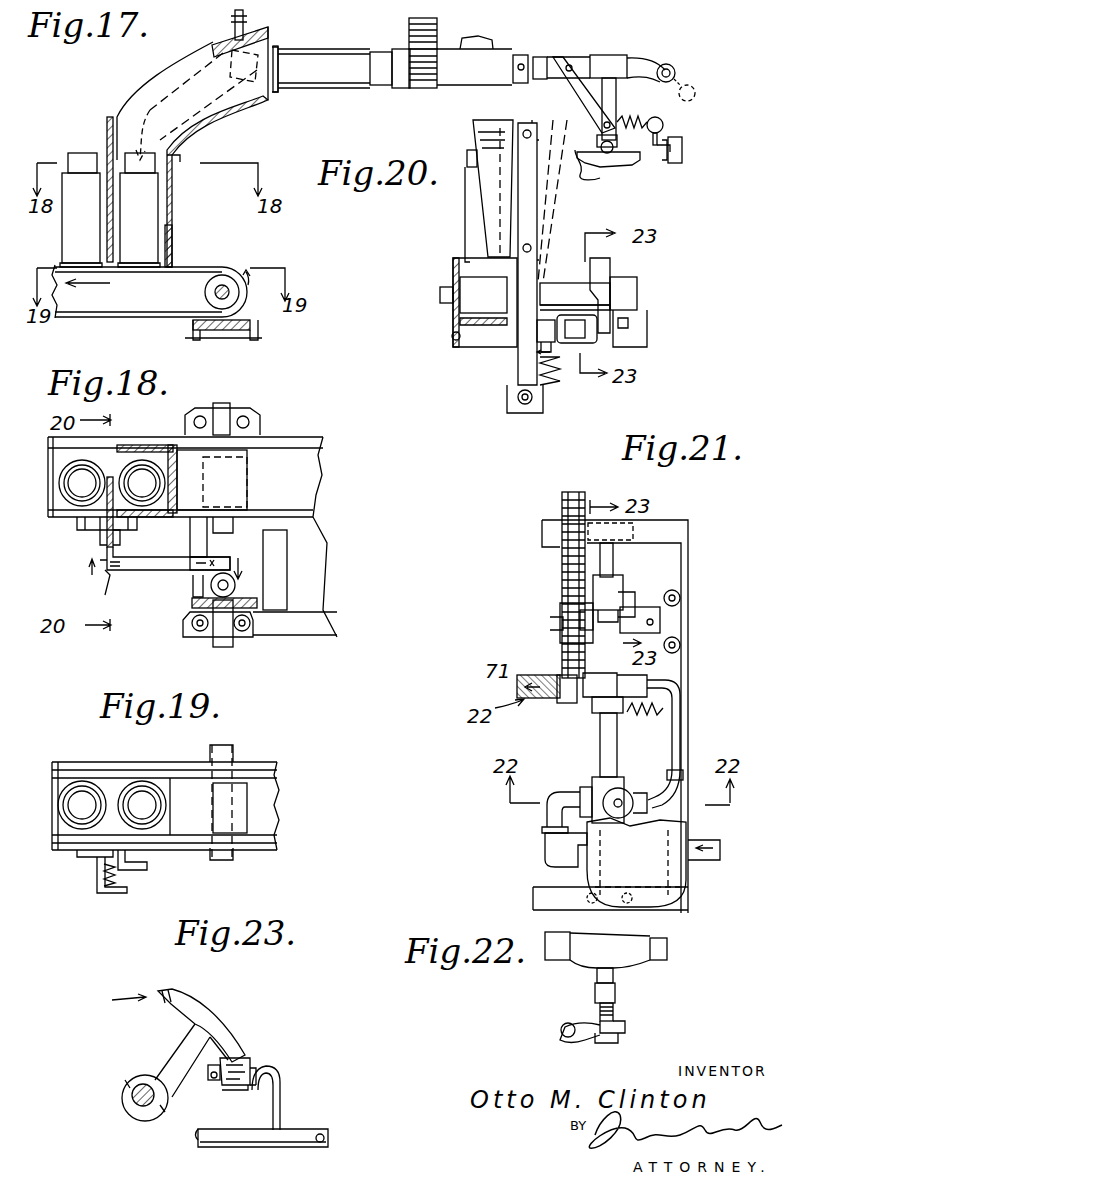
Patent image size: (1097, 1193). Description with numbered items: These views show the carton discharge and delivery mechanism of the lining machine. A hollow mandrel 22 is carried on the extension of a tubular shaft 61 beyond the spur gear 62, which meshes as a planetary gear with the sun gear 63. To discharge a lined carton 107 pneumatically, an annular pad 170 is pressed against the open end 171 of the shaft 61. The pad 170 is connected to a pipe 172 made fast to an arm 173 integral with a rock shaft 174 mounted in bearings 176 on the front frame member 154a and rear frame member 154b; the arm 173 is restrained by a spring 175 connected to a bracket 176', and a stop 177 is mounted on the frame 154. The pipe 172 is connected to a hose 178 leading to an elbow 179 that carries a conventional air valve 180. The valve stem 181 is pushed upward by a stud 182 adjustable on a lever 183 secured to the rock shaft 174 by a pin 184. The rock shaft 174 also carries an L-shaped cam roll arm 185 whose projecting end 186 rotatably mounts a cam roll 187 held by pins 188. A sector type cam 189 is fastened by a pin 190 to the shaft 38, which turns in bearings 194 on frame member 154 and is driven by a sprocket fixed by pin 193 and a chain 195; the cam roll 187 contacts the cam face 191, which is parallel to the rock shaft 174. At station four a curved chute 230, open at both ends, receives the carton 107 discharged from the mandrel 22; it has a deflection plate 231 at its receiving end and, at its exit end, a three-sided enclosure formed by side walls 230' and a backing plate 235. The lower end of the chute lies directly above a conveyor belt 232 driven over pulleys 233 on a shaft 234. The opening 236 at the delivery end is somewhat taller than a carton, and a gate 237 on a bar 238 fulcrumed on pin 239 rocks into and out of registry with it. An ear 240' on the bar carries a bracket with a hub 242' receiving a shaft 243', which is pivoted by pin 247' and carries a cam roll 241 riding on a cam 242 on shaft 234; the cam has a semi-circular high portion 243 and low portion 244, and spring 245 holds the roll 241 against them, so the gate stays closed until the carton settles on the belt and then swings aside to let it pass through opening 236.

In FIG. 20, the mandrel 22 is at (398, 78).
In FIG. 21, the mandrel 22 is at (538, 686).
In FIG. 23, the shaft 38 is at (132, 1100).
In FIG. 20, the shaft 61 is at (512, 70).
In FIG. 21, the shaft 61 is at (540, 678).
In FIG. 20, the spur gear 62 is at (437, 55).
In FIG. 20, the sun gear 63 is at (410, 36).
In FIG. 17, the carton 107 is at (145, 250).
In FIG. 20, the carton 107 is at (338, 40).
In FIG. 18, the carton 107 is at (78, 462).
In FIG. 19, the carton 107 is at (142, 782).
In FIG. 20, the frame 154 is at (683, 147).
In FIG. 21, the frame 154 is at (672, 662).
In FIG. 20, the front frame member 154a is at (622, 180).
In FIG. 21, the front frame member 154a is at (533, 902).
In FIG. 21, the rear frame member 154b is at (672, 532).
In FIG. 20, the annular pad 170 is at (547, 60).
In FIG. 21, the annular pad 170 is at (565, 705).
In FIG. 20, the open end 171 is at (528, 56).
In FIG. 20, the pipe 172 is at (588, 55).
In FIG. 21, the pipe 172 is at (562, 605).
In FIG. 20, the arm 173 is at (610, 98).
In FIG. 21, the arm 173 is at (607, 737).
In FIG. 20, the rock shaft 174 is at (612, 168).
In FIG. 21, the rock shaft 174 is at (614, 562).
In FIG. 22, the rock shaft 174 is at (565, 1040).
In FIG. 23, the rock shaft 174 is at (198, 1138).
In FIG. 20, the spring 175 is at (650, 118).
In FIG. 21, the spring 175 is at (658, 712).
In FIG. 20, the bearings 176 is at (691, 153).
In FIG. 21, the bearings 176 is at (656, 518).
In FIG. 20, the bracket 176' is at (723, 161).
In FIG. 20, the stop 177 is at (672, 157).
In FIG. 20, the hose 178 is at (675, 70).
In FIG. 21, the hose 178 is at (680, 695).
In FIG. 21, the elbow 179 is at (660, 805).
In FIG. 21, the air valve 180 is at (656, 775).
In FIG. 22, the air valve 180 is at (667, 947).
In FIG. 22, the valve stem 181 is at (615, 985).
In FIG. 22, the stud 182 is at (597, 1010).
In FIG. 22, the lever 183 is at (560, 1030).
In FIG. 22, the pin 184 is at (565, 1022).
In FIG. 23, the L-shaped cam roll arm 185 is at (283, 1088).
In FIG. 23, the projecting end 186 is at (208, 1082).
In FIG. 21, the cam roll 187 is at (625, 585).
In FIG. 23, the cam roll 187 is at (250, 1058).
In FIG. 23, the pins 188 is at (252, 1090).
In FIG. 23, the sector type cam 189 is at (187, 1002).
In FIG. 23, the pin 190 is at (125, 1082).
In FIG. 21, the face 191 is at (635, 600).
In FIG. 21, the pin 193 is at (590, 645).
In FIG. 21, the bearings 194 is at (662, 620).
In FIG. 21, the chain 195 is at (562, 505).
In FIG. 17, the curved chute 230 is at (195, 147).
In FIG. 18, the side walls 230' is at (147, 465).
In FIG. 17, the deflection plate 231 is at (236, 24).
In FIG. 17, the conveyor belt 232 is at (188, 267).
In FIG. 18, the conveyor belt 232 is at (245, 497).
In FIG. 19, the conveyor belt 232 is at (240, 790).
In FIG. 17, the pulleys 233 is at (236, 280).
In FIG. 17, the shaft 234 is at (205, 293).
In FIG. 20, the shaft 234 is at (445, 300).
In FIG. 18, the shaft 234 is at (228, 405).
In FIG. 19, the shaft 234 is at (232, 750).
In FIG. 17, the backing plate 235 is at (172, 238).
In FIG. 18, the backing plate 235 is at (205, 468).
In FIG. 17, the opening 236 is at (170, 182).
In FIG. 17, the gate 237 is at (107, 130).
In FIG. 20, the gate 237 is at (476, 128).
In FIG. 18, the gate 237 is at (95, 487).
In FIG. 20, the bar 238 is at (548, 125).
In FIG. 18, the bar 238 is at (100, 540).
In FIG. 19, the bar 238 is at (80, 857).
In FIG. 20, the fulcrum pin 239 is at (512, 400).
In FIG. 18, the ear 240' is at (165, 550).
In FIG. 20, the cam roll 241 is at (600, 340).
In FIG. 18, the cam roll 241 is at (210, 593).
In FIG. 20, the cam 242 is at (637, 295).
In FIG. 18, the cam 242 is at (190, 612).
In FIG. 18, the hub 242' is at (61, 586).
In FIG. 20, the semi-circular high portion 243 is at (571, 201).
In FIG. 18, the shaft 243' is at (97, 591).
In FIG. 20, the semi-circular low portion 244 is at (640, 317).
In FIG. 18, the semi-circular low portion 244 is at (260, 597).
In FIG. 20, the spring 245 is at (556, 390).
In FIG. 19, the spring 245 is at (118, 878).
In FIG. 18, the pin 247' is at (231, 565).